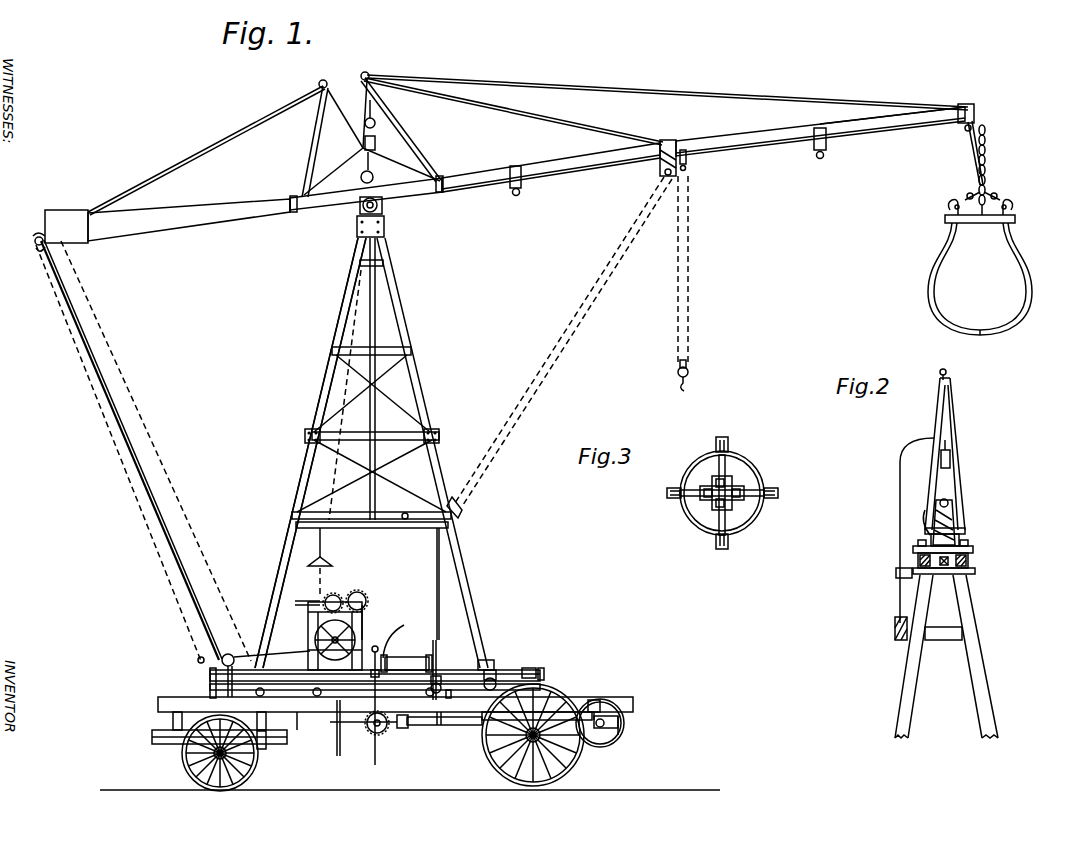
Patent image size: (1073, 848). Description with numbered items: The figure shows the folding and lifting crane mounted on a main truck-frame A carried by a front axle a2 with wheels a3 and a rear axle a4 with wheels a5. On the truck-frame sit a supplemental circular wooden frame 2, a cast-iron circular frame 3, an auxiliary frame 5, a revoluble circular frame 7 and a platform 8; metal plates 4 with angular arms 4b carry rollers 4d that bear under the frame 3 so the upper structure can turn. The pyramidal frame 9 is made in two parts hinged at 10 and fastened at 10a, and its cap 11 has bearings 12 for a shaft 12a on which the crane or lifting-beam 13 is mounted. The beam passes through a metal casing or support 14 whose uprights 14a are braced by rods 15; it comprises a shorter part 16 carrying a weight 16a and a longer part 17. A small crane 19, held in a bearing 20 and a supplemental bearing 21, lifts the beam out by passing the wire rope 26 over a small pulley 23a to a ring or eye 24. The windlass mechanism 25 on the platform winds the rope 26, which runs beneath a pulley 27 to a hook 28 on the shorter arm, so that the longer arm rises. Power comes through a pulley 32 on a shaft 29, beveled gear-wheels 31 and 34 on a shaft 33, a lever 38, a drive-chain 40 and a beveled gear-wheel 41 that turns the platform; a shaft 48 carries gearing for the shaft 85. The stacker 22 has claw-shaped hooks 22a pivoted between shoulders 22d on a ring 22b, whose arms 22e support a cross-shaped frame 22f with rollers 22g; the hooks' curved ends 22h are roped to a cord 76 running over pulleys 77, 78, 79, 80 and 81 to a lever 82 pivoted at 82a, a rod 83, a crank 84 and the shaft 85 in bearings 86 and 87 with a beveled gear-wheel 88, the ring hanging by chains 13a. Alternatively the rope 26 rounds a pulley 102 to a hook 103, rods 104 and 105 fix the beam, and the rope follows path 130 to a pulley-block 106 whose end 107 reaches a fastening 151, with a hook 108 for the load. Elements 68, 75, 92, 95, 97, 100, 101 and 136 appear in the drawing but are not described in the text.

In FIG. 1, the main truck-frame A is at (157, 703).
In FIG. 1, the supplemental circular wooden frame 2 is at (473, 700).
In FIG. 1, the circular frame 3 is at (303, 718).
In FIG. 1, the metal plates 4 is at (528, 668).
In FIG. 1, the angular arms 4b is at (494, 678).
In FIG. 1, the rollers 4d is at (430, 697).
In FIG. 1, the auxiliary frame 5 is at (448, 699).
In FIG. 1, the circular revoluble frame 7 is at (544, 677).
In FIG. 1, the platform 8 is at (542, 671).
In FIG. 1, the pyramidal frame 9 is at (297, 490).
In FIG. 1, the hinge 10 is at (440, 436).
In FIG. 1, the catch or fastening device 10a is at (305, 436).
In FIG. 1, the cast-iron cap 11 is at (386, 230).
In FIG. 2, the cast-iron cap 11 is at (975, 577).
In FIG. 1, the bearings 12 is at (360, 208).
In FIG. 2, the bearings 12 is at (917, 543).
In FIG. 1, the shaft 12a is at (358, 226).
In FIG. 2, the shaft 12a is at (974, 549).
In FIG. 1, the crane or lifting-beam 13 is at (551, 170).
In FIG. 2, the crane or lifting-beam 13 is at (928, 536).
In FIG. 1, the chains 13a is at (968, 192).
In FIG. 1, the metal casing or support 14 is at (324, 212).
In FIG. 2, the metal casing or support 14 is at (962, 538).
In FIG. 1, the uprights or braces 14a is at (422, 132).
In FIG. 2, the uprights or braces 14a is at (932, 421).
In FIG. 1, the rods 15 is at (172, 168).
In FIG. 1, the shorter arm of lifting beam 16 is at (194, 214).
In FIG. 1, the weight 16a is at (70, 212).
In FIG. 1, the longer arm of lifting beam 17 is at (746, 151).
In FIG. 1, the small crane 19 is at (378, 121).
In FIG. 2, the small crane 19 is at (899, 485).
In FIG. 2, the bearing 20 is at (895, 630).
In FIG. 2, the supplemental bearing 21 is at (896, 573).
In FIG. 1, the stacker or load-carrier 22 is at (980, 275).
In FIG. 1, the claw-shaped hooks 22a is at (1022, 296).
In FIG. 3, the circular head or ring 22b is at (738, 455).
In FIG. 3, the shoulders or projections 22d is at (666, 495).
In FIG. 3, the inwardly-directed arms 22e is at (714, 462).
In FIG. 3, the cross-shaped frame 22f is at (714, 503).
In FIG. 3, the rollers or pulleys 22g is at (716, 483).
In FIG. 1, the curved upper ends of hooks 22h is at (950, 203).
In FIG. 1, the small pulley 23a is at (376, 145).
In FIG. 2, the small pulley 23a is at (952, 462).
In FIG. 1, the ring or eye 24 is at (362, 174).
In FIG. 2, the ring or eye 24 is at (944, 514).
In FIG. 1, the windlass mechanism 25 is at (364, 615).
In FIG. 1, the wire rope 26 is at (74, 324).
In FIG. 1, the pulley or roller 27 is at (228, 654).
In FIG. 1, the hook 28 is at (40, 236).
In FIG. 1, the shaft 29 is at (603, 727).
In FIG. 1, the beveled gear-wheel 31 is at (592, 700).
In FIG. 1, the pulley or power-wheel 32 is at (624, 724).
In FIG. 1, the shaft 33 is at (440, 726).
In FIG. 1, the beveled gear-wheel 34 is at (385, 732).
In FIG. 1, the lever 38 is at (341, 745).
In FIG. 1, the drive-chain 40 is at (404, 729).
In FIG. 1, the beveled gear-wheel 41 is at (441, 683).
In FIG. 1, the shaft 48 is at (375, 646).
In FIG. 1, the rod 68 is at (375, 762).
In FIG. 3, the ring 75 is at (762, 515).
In FIG. 1, the wire rope or cord 76 is at (378, 312).
In FIG. 1, the pulley 77 is at (966, 134).
In FIG. 1, the pulley 78 is at (820, 159).
In FIG. 1, the pulley 79 is at (668, 180).
In FIG. 1, the pulley 80 is at (519, 197).
In FIG. 2, the pulley 81 is at (944, 566).
In FIG. 1, the lever 82 is at (355, 511).
In FIG. 1, the pivot 82a is at (408, 512).
In FIG. 1, the rod 83 is at (448, 584).
In FIG. 1, the crank 84 is at (437, 658).
In FIG. 1, the shaft 85 is at (408, 660).
In FIG. 1, the bearing 86 is at (385, 657).
In FIG. 1, the bearing 87 is at (428, 655).
In FIG. 1, the beveled gear-wheel 88 is at (401, 636).
In FIG. 1, the gear frame 92 is at (310, 633).
In FIG. 1, the gear 95 is at (359, 591).
In FIG. 1, the gear 97 is at (333, 594).
In FIG. 1, the wheel 100 is at (315, 622).
In FIG. 1, the pulley 101 is at (326, 547).
In FIG. 1, the pulley 102 is at (35, 252).
In FIG. 1, the hook 103 is at (199, 664).
In FIG. 1, the rod 104 is at (174, 489).
In FIG. 1, the rod 105 is at (527, 400).
In FIG. 1, the pulley-block 106 is at (689, 372).
In FIG. 1, the upward end of rope 107 is at (690, 284).
In FIG. 1, the hook 108 is at (679, 388).
In FIG. 1, the rope path 130 is at (340, 377).
In FIG. 1, the chain 136 is at (988, 152).
In FIG. 1, the hook or fastening device 151 is at (688, 166).
In FIG. 1, the front axle a2 is at (182, 760).
In FIG. 1, the front wheels a3 is at (186, 777).
In FIG. 1, the rear axle a4 is at (582, 768).
In FIG. 1, the rear wheels a5 is at (498, 764).